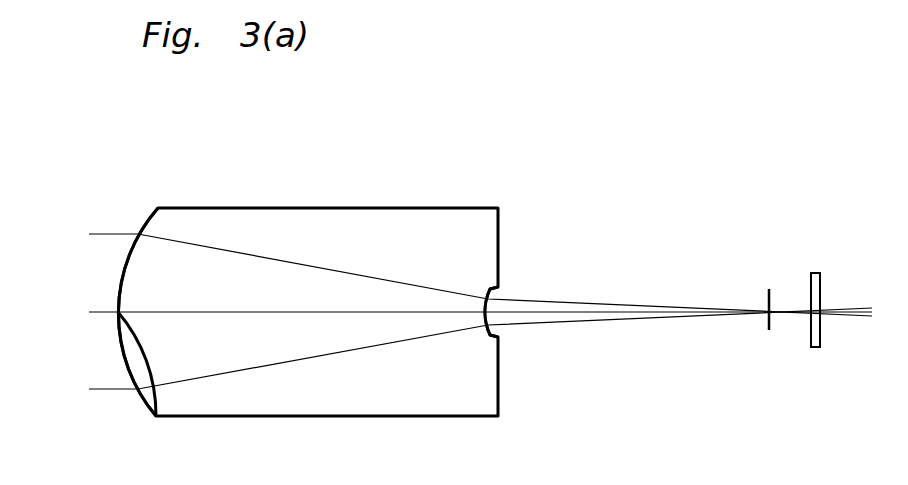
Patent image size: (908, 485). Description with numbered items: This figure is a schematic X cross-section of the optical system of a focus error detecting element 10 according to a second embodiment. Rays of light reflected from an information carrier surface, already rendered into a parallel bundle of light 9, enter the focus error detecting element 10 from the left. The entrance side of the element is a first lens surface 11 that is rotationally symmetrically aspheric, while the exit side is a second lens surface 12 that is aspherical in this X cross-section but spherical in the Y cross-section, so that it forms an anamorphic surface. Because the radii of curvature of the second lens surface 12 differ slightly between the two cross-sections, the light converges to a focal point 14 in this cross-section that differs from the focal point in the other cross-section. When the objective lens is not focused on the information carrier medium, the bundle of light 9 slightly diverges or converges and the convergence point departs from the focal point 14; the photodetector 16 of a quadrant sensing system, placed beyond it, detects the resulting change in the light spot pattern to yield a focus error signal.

The parallel bundle of light 9 is at (108, 232).
The focus error detecting element 10 is at (309, 230).
The first lens surface 11 is at (145, 400).
The second lens surface 12 is at (502, 290).
The focal point 14 is at (768, 290).
The photodetector 16 is at (817, 272).